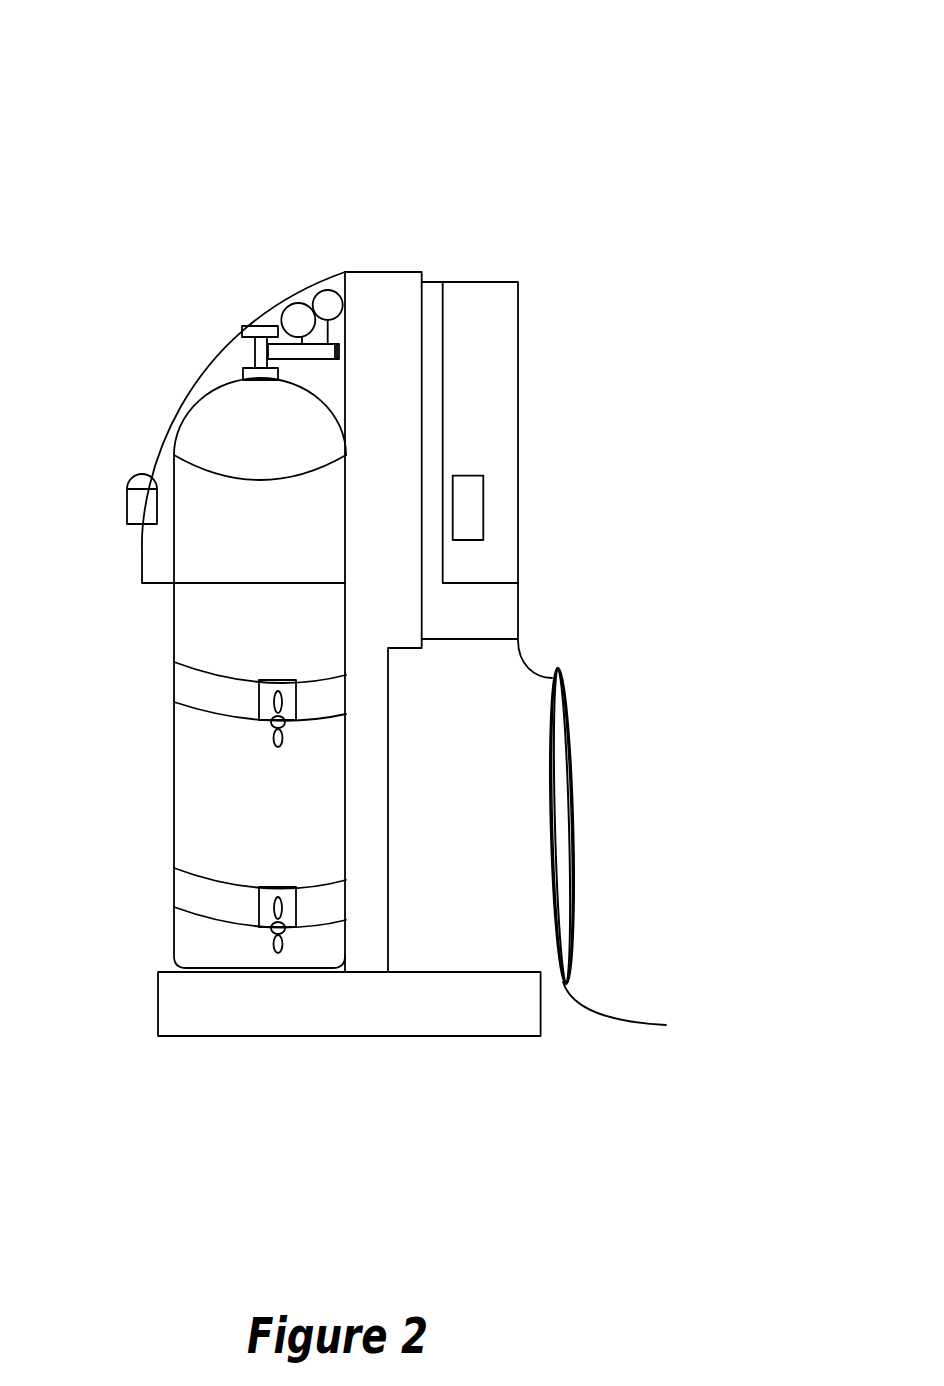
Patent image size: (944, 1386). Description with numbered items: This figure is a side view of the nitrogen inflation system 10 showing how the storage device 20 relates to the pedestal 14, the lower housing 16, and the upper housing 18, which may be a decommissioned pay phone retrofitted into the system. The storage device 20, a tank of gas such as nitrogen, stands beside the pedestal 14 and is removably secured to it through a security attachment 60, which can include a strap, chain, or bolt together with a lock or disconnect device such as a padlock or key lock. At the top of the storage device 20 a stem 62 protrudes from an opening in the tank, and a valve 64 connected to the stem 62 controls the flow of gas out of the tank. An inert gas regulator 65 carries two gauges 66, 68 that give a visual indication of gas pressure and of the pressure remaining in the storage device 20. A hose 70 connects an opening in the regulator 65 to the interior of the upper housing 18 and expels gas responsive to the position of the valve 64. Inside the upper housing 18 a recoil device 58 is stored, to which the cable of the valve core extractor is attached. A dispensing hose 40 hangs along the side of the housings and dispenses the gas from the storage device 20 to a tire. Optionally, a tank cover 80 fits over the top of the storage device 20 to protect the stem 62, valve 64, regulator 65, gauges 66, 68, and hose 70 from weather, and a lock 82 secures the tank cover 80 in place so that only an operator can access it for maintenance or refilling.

The nitrogen inflation system 10 is at (485, 40).
The pedestal 14 is at (367, 272).
The lower housing 16 is at (432, 282).
The upper housing 18 is at (470, 282).
The storage device 20 is at (213, 778).
The hose 40 is at (569, 789).
The recoil device 58 is at (483, 512).
The security attachment 60 is at (197, 690).
The stem 62 is at (258, 352).
The valve 64 is at (260, 326).
The inert gas regulator 65 is at (287, 353).
The gauge 66 is at (333, 290).
The gauge 68 is at (296, 303).
The hose 70 is at (343, 355).
The tank cover 80 is at (163, 436).
The lock 82 is at (127, 506).